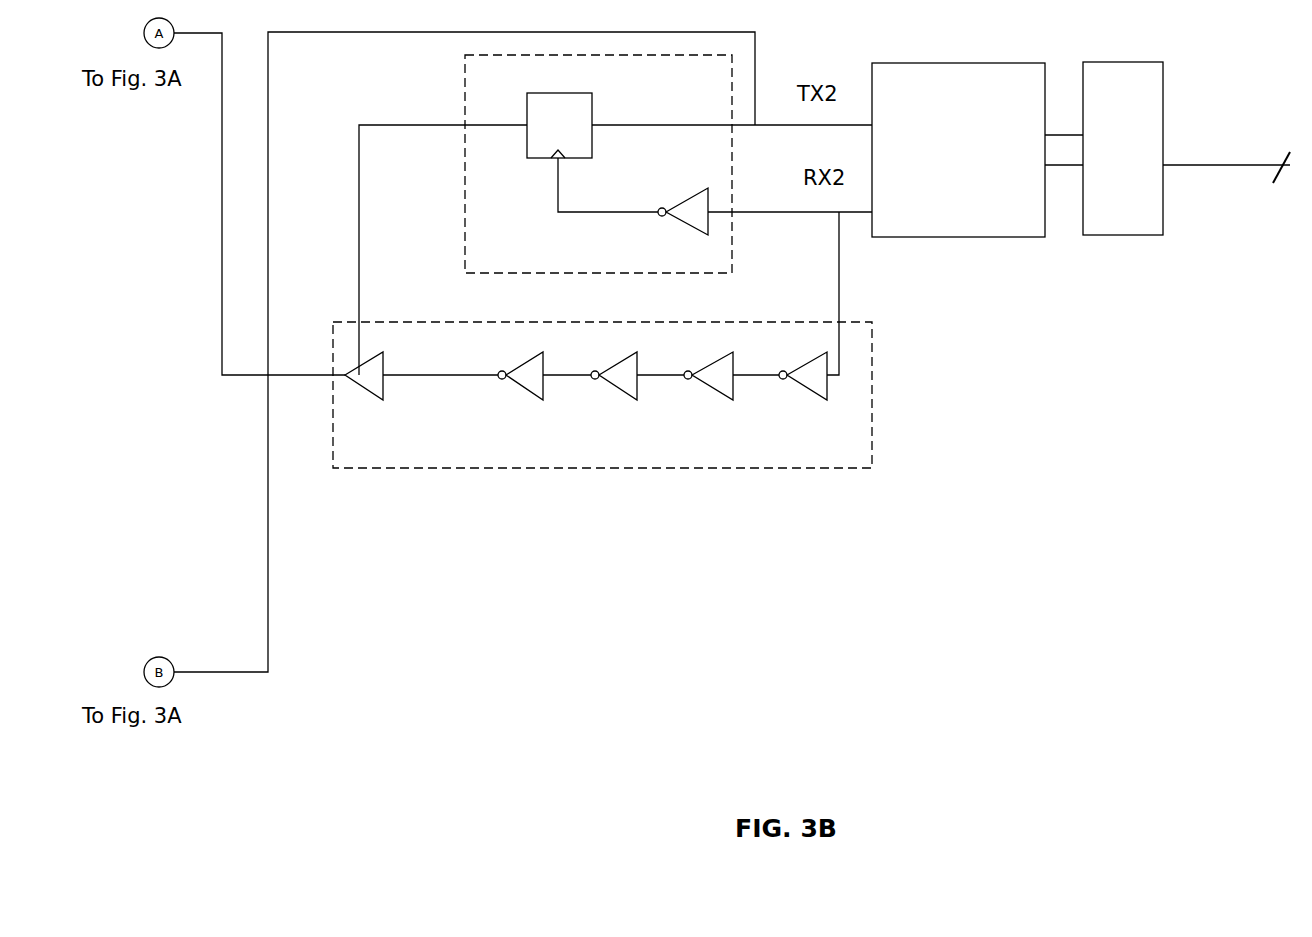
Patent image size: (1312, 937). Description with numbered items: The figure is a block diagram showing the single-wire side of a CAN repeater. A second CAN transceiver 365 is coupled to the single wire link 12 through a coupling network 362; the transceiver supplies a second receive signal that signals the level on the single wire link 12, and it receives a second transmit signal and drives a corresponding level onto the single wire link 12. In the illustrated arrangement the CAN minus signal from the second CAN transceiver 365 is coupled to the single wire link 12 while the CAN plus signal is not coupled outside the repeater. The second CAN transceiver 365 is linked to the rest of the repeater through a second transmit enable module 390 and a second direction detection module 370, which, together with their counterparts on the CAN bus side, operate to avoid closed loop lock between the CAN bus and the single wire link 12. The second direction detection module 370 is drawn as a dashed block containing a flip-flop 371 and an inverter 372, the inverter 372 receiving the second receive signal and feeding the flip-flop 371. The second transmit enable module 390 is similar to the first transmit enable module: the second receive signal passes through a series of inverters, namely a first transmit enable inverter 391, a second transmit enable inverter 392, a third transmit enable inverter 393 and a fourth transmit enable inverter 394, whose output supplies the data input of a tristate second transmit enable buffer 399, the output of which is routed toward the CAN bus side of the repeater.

The single wire link 12 is at (1240, 165).
The coupling network 362 is at (1143, 237).
The second CAN transceiver 365 is at (1010, 240).
The second direction detection module 370 is at (465, 238).
The direction detection flip-flop 371 is at (557, 93).
The inverter 372 is at (690, 226).
The second transmit enable module 390 is at (560, 470).
The first transmit enable inverter 391 is at (805, 390).
The second transmit enable inverter 392 is at (710, 390).
The third transmit enable inverter 393 is at (615, 390).
The fourth transmit enable inverter 394 is at (522, 390).
The second transmit enable buffer 399 is at (360, 390).